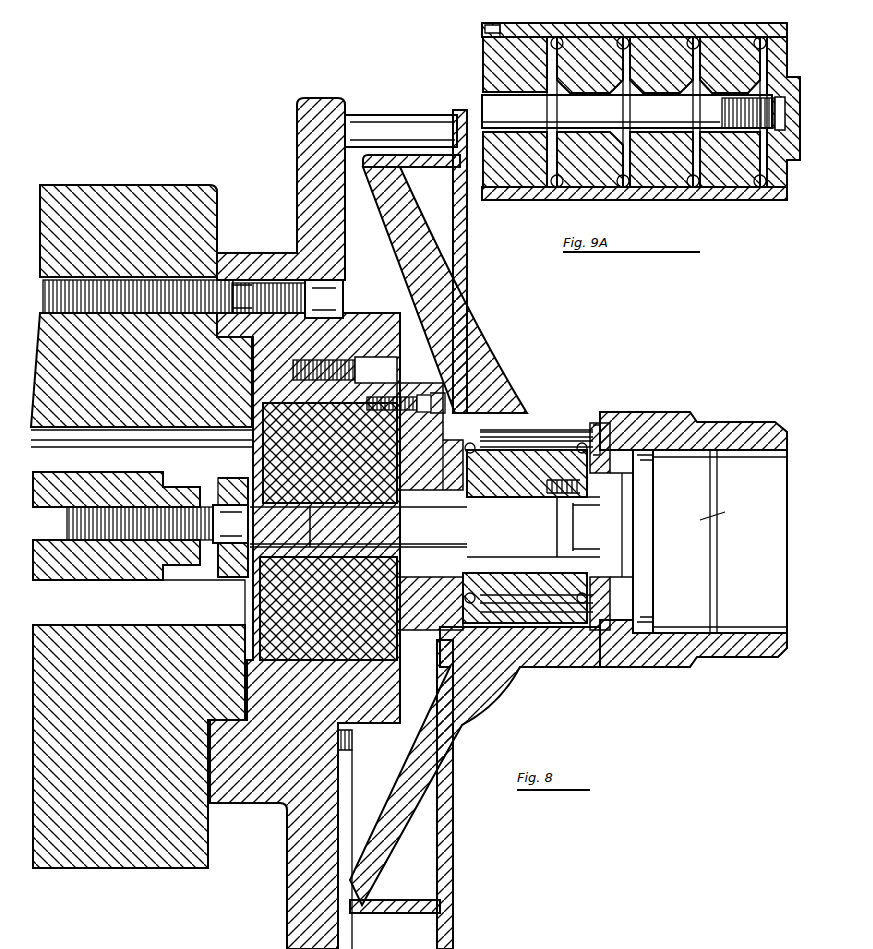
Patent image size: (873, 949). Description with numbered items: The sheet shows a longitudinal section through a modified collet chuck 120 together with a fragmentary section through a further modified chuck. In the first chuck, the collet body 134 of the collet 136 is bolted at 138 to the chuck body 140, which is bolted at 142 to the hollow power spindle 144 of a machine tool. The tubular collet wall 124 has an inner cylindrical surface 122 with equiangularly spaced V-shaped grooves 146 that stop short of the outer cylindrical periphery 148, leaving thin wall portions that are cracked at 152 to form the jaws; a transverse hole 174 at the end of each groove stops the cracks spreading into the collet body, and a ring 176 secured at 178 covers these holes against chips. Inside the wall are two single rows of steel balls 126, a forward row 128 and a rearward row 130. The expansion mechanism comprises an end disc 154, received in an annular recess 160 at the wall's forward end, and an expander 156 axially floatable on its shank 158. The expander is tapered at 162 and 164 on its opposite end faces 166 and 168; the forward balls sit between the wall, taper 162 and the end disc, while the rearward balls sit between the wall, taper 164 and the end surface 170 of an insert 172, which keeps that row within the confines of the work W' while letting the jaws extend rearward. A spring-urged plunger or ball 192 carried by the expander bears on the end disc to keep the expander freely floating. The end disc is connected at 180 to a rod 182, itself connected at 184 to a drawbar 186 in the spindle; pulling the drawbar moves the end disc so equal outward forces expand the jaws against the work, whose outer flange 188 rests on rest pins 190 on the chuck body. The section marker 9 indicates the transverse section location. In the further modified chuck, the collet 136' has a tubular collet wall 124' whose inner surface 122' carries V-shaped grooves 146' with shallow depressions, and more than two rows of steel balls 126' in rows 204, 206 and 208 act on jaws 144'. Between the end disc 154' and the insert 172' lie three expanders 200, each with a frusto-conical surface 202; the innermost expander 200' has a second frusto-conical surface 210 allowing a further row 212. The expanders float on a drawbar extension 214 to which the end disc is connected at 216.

In FIG. 8, the power spindle 144 is at (316, 424).
In FIG. 8, the chuck body 140 is at (307, 180).
In FIG. 8, the rest pins 190 is at (405, 118).
In FIG. 8, the outer flange 188 is at (458, 112).
In FIG. 9A, the outer flange 188 is at (470, 60).
In FIG. 8, the bolt connection 142 is at (326, 292).
In FIG. 8, the collet body 134 is at (375, 350).
In FIG. 8, the bolt connection 138 is at (396, 368).
In FIG. 8, the bolt connection 178 is at (408, 397).
In FIG. 8, the transverse hole 174 is at (428, 397).
In FIG. 8, the collet chuck 120 is at (450, 398).
In FIG. 8, the steel balls 126 is at (532, 488).
In FIG. 8, the V-shaped grooves 146 is at (576, 411).
In FIG. 8, the cracks 152 is at (520, 430).
In FIG. 8, the operative connection 184 is at (175, 487).
In FIG. 8, the rod 182 is at (378, 528).
In FIG. 8, the end surface 170 is at (430, 497).
In FIG. 8, the end face 168 is at (460, 490).
In FIG. 8, the tapered surface 164 is at (478, 490).
In FIG. 8, the tapered surface 162 is at (555, 493).
In FIG. 8, the shank 158 is at (532, 533).
In FIG. 8, the drawbar 186 is at (110, 570).
In FIG. 8, the section line 9 is at (629, 465).
In FIG. 8, the work W' is at (693, 516).
In FIG. 8, the end disc 154 is at (650, 538).
In FIG. 8, the spring-urged plunger or ball 192 is at (613, 510).
In FIG. 8, the connection 180 is at (640, 527).
In FIG. 8, the end face 166 is at (600, 600).
In FIG. 8, the insert 172 is at (380, 692).
In FIG. 8, the collet 136 is at (437, 671).
In FIG. 8, the ring 176 is at (390, 700).
In FIG. 8, the expander 156 is at (507, 628).
In FIG. 8, the inner cylindrical surface 122 is at (557, 651).
In FIG. 8, the row of steel balls 128 is at (580, 625).
In FIG. 8, the annular recess 160 is at (610, 660).
In FIG. 8, the tubular collet wall 124 is at (524, 674).
In FIG. 8, the outer cylindrical periphery 148 is at (570, 640).
In FIG. 8, the row of steel balls 130 is at (503, 655).
In FIG. 9A, the frusto-conical surface 202 is at (622, 36).
In FIG. 9A, the insert 172' is at (497, 112).
In FIG. 9A, the frusto-conical surface 210 is at (572, 40).
In FIG. 9A, the row of steel balls 208 is at (655, 36).
In FIG. 9A, the row of steel balls 206 is at (728, 40).
In FIG. 9A, the row of steel balls 204 is at (791, 104).
In FIG. 9A, the drawbar extension 214 is at (626, 115).
In FIG. 9A, the operative connection 216 is at (765, 113).
In FIG. 9A, the inner surface 122' is at (634, 219).
In FIG. 9A, the steel balls 126' is at (654, 129).
In FIG. 9A, the expanders 200 is at (681, 127).
In FIG. 9A, the innermost expander 200' is at (594, 27).
In FIG. 9A, the tubular collet wall 124' is at (517, 204).
In FIG. 9A, the end disc 154' is at (794, 208).
In FIG. 9A, the jaws 144' is at (750, 123).
In FIG. 9A, the V-shaped grooves 146' is at (477, 17).
In FIG. 9A, the row of steel balls 212 is at (530, 36).
In FIG. 9A, the collet 136' is at (484, 221).